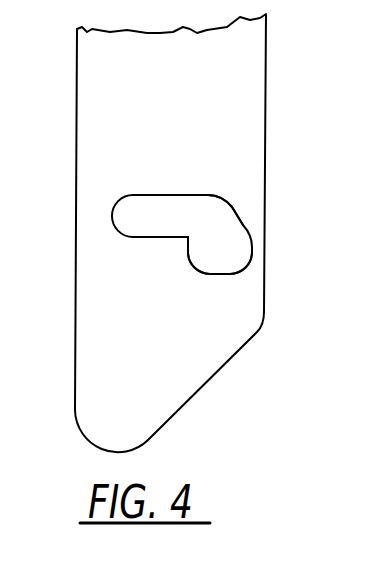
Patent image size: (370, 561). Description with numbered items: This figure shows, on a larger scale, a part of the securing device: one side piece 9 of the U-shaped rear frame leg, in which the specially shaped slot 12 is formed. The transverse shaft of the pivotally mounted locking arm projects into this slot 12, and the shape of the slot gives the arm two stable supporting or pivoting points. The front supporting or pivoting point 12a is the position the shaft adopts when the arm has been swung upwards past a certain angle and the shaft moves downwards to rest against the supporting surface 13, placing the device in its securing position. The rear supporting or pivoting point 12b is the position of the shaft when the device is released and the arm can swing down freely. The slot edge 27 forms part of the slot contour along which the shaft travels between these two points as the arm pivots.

The side piece 9 is at (197, 360).
The slot 12 is at (154, 212).
The front supporting or pivoting point 12a is at (211, 268).
The rear supporting or pivoting point 12b is at (148, 231).
The supporting surface 13 is at (190, 253).
The inclined edge of slot 27 is at (227, 221).